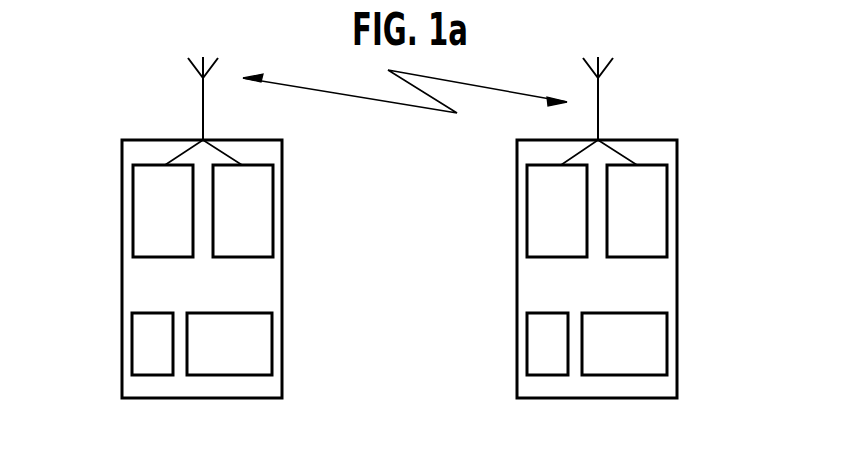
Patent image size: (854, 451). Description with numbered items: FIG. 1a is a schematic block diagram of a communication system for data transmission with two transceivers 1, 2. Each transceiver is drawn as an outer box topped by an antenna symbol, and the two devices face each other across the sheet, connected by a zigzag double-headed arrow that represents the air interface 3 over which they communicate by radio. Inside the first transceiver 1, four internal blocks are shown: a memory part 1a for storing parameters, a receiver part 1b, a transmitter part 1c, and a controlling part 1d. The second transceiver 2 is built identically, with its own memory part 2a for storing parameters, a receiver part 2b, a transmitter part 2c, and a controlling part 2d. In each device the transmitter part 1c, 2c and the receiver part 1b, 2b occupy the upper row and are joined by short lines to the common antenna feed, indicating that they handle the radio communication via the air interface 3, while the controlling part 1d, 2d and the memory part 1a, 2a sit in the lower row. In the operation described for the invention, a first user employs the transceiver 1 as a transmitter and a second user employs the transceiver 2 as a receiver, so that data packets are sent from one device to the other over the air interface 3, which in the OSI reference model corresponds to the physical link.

The transceiver 1 is at (283, 280).
The memory part 1a is at (263, 353).
The receiver part 1b is at (263, 228).
The transmitter part 1c is at (138, 227).
The controlling part 1d is at (138, 352).
The transceiver 2 is at (678, 280).
The memory part 2a is at (657, 353).
The receiver part 2b is at (657, 228).
The transmitter part 2c is at (532, 226).
The controlling part 2d is at (532, 352).
The air interface 3 is at (380, 102).